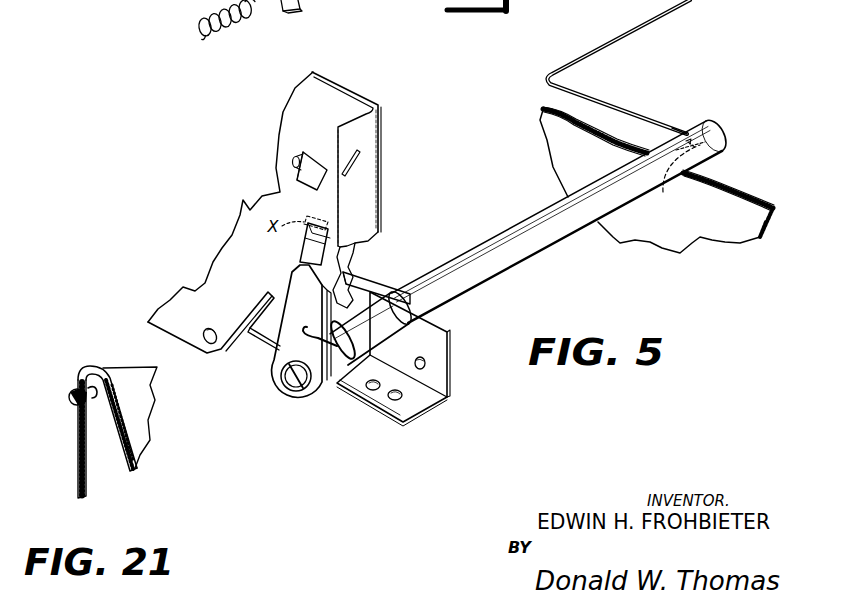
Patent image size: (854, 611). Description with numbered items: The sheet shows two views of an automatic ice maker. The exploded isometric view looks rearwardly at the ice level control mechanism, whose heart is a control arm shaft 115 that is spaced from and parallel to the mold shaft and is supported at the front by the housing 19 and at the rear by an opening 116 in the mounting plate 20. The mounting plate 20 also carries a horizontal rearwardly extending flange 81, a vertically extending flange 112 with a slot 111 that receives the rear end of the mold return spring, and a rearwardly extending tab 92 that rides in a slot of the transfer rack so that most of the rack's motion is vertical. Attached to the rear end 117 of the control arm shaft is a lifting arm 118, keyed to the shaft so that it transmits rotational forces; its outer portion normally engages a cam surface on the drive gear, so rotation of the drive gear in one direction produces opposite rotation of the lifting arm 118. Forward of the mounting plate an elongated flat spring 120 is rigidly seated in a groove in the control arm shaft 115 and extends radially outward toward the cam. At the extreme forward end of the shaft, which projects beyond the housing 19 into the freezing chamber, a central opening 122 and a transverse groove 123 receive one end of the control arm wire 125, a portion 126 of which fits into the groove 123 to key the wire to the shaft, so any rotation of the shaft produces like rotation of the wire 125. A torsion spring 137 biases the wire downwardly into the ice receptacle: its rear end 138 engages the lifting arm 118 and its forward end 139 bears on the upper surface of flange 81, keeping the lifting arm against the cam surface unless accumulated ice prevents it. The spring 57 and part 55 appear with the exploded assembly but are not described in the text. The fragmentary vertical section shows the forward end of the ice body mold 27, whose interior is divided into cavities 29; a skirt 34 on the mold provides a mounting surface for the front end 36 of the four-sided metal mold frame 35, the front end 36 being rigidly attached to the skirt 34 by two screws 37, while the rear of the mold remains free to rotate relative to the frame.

In FIG. 5, the coil spring 57 is at (232, 26).
In FIG. 5, the block 55 is at (303, 4).
In FIG. 5, the mounting plate 20 is at (358, 188).
In FIG. 5, the vertically extending flange 112 is at (370, 148).
In FIG. 5, the slot 111 is at (349, 168).
In FIG. 5, the tab 92 is at (302, 161).
In FIG. 5, the control arm wire 125 is at (630, 33).
In FIG. 5, the portion of control arm 126 is at (668, 124).
In FIG. 5, the housing 19 is at (720, 238).
In FIG. 5, the control arm shaft 115 is at (579, 221).
In FIG. 5, the groove 123 is at (727, 142).
In FIG. 5, the central opening 122 is at (672, 199).
In FIG. 5, the opening 116 is at (408, 369).
In FIG. 5, the torsion spring 137 is at (364, 388).
In FIG. 5, the forward end of torsion spring 139 is at (428, 417).
In FIG. 5, the flange 81 is at (380, 420).
In FIG. 5, the rear end of torsion spring 138 is at (305, 328).
In FIG. 5, the flat spring 120 is at (378, 282).
In FIG. 5, the lifting arm 118 is at (280, 323).
In FIG. 5, the rear end of control arm shaft 117 is at (302, 392).
In FIG. 21, the ice body mold 27 is at (93, 420).
In FIG. 21, the cavities 29 is at (127, 398).
In FIG. 21, the skirt 34 is at (77, 457).
In FIG. 21, the front end of mold frame 36 is at (87, 457).
In FIG. 21, the screws 37 is at (70, 402).
In FIG. 21, the mold frame 35 is at (95, 394).